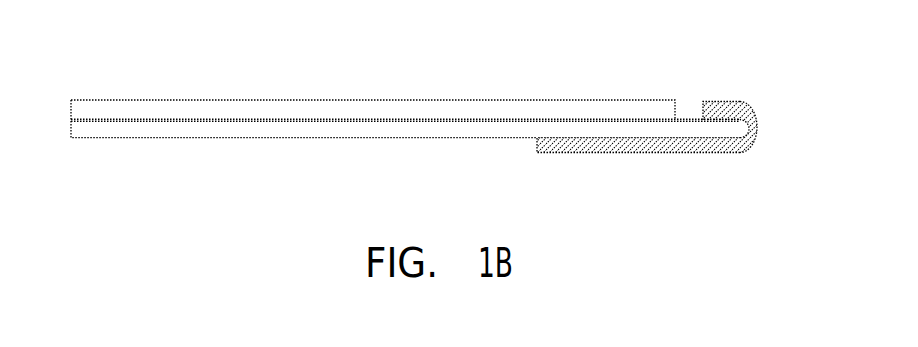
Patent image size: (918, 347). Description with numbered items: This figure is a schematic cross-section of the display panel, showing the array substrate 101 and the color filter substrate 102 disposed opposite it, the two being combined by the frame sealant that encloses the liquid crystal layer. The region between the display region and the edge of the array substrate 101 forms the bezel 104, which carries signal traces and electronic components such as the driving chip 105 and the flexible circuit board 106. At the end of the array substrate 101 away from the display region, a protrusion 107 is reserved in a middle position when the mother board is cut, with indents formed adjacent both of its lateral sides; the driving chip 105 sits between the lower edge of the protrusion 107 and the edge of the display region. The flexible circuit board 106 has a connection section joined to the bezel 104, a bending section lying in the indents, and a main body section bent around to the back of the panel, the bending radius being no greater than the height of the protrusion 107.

The array substrate 101 is at (113, 138).
The color filter substrate 102 is at (178, 100).
The bezel 104 is at (681, 112).
The driving chip 105 is at (705, 101).
The flexible circuit board 106 is at (635, 153).
The protrusion 107 is at (757, 118).